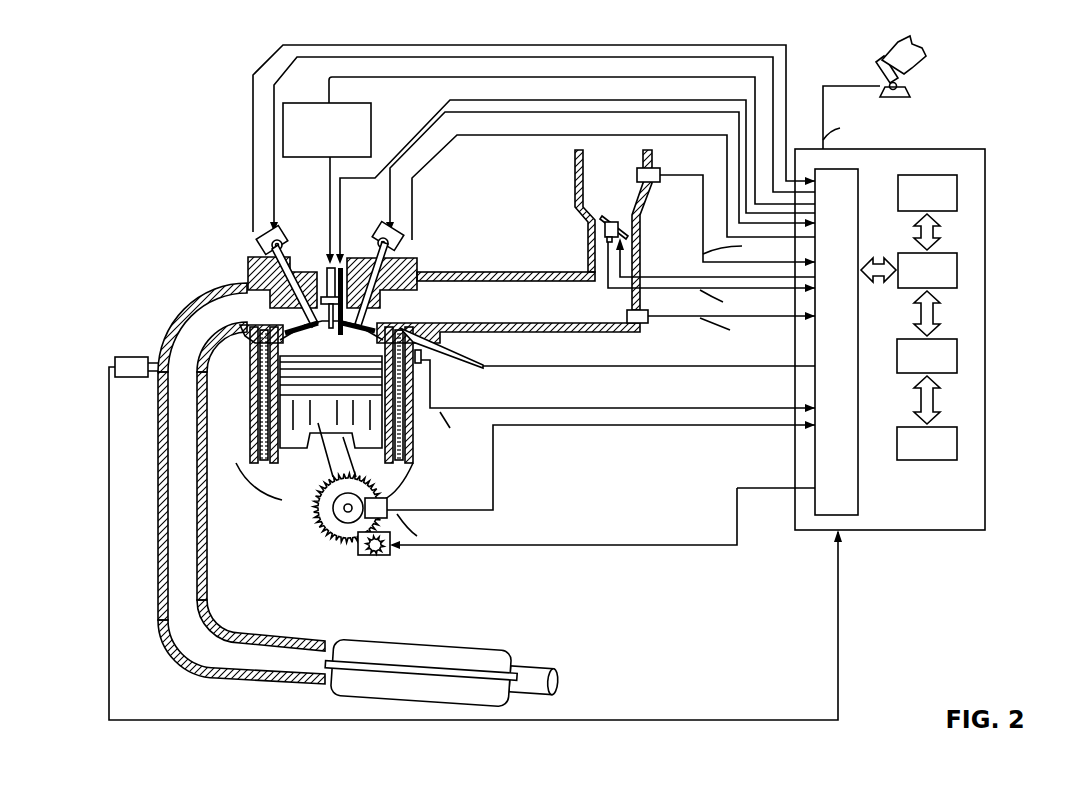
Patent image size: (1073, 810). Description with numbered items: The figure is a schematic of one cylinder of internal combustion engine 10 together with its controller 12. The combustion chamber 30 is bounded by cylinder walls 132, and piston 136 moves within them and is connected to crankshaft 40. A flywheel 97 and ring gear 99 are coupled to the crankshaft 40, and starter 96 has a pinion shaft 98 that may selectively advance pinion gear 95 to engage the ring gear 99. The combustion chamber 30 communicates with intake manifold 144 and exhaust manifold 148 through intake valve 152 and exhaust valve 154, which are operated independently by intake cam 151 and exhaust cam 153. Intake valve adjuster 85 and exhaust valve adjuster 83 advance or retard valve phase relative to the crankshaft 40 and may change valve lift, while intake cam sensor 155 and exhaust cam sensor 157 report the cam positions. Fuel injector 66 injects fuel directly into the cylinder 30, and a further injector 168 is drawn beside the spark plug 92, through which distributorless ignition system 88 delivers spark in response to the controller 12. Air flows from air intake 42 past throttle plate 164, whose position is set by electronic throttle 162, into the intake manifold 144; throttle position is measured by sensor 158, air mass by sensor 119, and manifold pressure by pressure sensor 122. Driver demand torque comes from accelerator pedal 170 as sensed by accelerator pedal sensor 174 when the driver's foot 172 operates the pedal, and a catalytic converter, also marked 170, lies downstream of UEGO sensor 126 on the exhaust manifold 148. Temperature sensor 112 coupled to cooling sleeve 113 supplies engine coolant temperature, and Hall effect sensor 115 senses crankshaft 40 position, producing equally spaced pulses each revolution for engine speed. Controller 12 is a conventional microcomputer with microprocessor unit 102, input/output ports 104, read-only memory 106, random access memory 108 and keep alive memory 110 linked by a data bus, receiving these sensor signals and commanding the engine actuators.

The internal combustion engine 10 is at (190, 213).
The controller 12 is at (985, 149).
The combustion chamber 30 is at (330, 340).
The crankshaft 40 is at (330, 538).
The air intake 42 is at (613, 230).
The fuel injector 66 is at (440, 352).
The exhaust valve adjuster 83 is at (276, 204).
The intake valve adjuster 85 is at (400, 256).
The distributorless ignition system 88 is at (297, 103).
The spark plug 92 is at (326, 262).
The pinion gear 95 is at (378, 558).
The starter 96 is at (386, 554).
The flywheel 97 is at (318, 516).
The pinion shaft 98 is at (364, 556).
The ring gear 99 is at (342, 549).
The microprocessor unit 102 is at (957, 270).
The input/output ports 104 is at (858, 176).
The read-only memory 106 is at (957, 186).
The random access memory 108 is at (957, 356).
The keep alive memory 110 is at (957, 443).
The temperature sensor 112 is at (422, 368).
The cooling sleeve 113 is at (415, 428).
The Hall effect sensor 115 is at (388, 500).
The air mass sensor 119 is at (652, 183).
The pressure sensor 122 is at (646, 324).
The UEGO sensor 126 is at (114, 362).
The cylinder walls 132 is at (280, 452).
The piston 136 is at (320, 456).
The intake manifold 144 is at (493, 300).
The exhaust manifold 148 is at (262, 300).
The intake cam 151 is at (381, 234).
The intake valve 152 is at (370, 326).
The exhaust cam 153 is at (282, 230).
The exhaust valve 154 is at (268, 300).
The intake cam sensor 155 is at (405, 246).
The exhaust cam sensor 157 is at (264, 238).
The throttle position sensor 158 is at (600, 243).
The electronic throttle 162 is at (630, 228).
The throttle plate 164 is at (600, 222).
The direct fuel injector 168 is at (345, 268).
The accelerator pedal 170 is at (340, 642).
The driver's foot 172 is at (925, 58).
The accelerator pedal sensor 174 is at (905, 90).